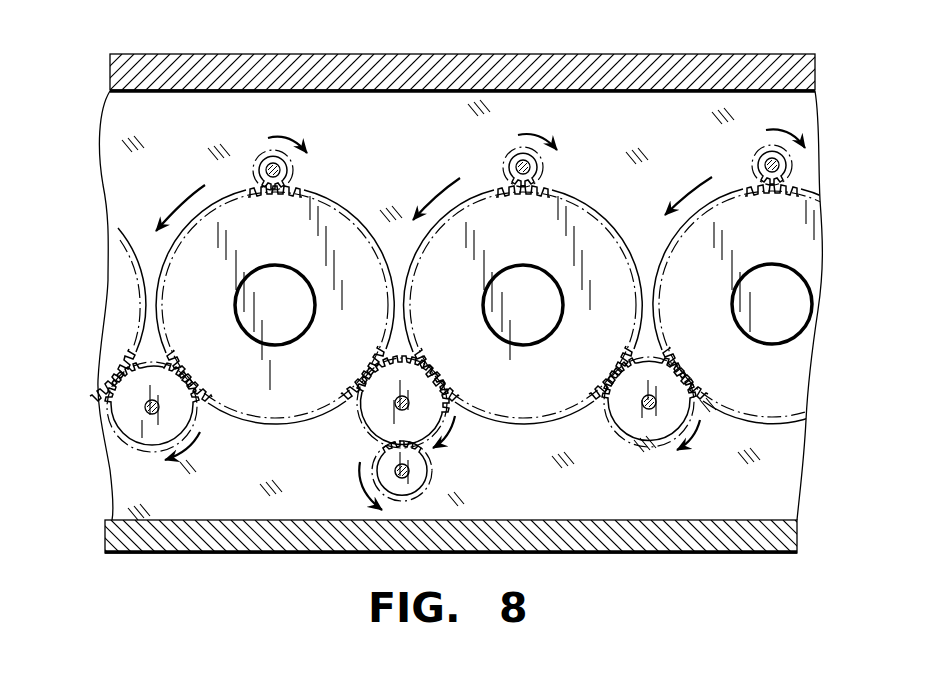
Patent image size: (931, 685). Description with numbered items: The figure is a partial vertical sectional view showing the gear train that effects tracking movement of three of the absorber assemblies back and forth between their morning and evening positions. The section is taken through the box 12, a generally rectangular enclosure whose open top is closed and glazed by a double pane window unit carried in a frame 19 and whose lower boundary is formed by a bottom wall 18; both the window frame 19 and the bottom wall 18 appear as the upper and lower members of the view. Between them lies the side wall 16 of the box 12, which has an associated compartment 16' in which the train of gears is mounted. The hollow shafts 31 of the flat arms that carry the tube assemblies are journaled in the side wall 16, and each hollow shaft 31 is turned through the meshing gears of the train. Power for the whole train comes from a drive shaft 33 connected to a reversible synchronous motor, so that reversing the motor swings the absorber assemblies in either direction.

The box 12 is at (82, 465).
The side wall 16 is at (468, 310).
The compartment 16' is at (80, 305).
The bottom wall 18 is at (719, 540).
The frame 19 is at (192, 56).
The hollow shaft 31 is at (312, 302).
The drive shaft 33 is at (407, 474).